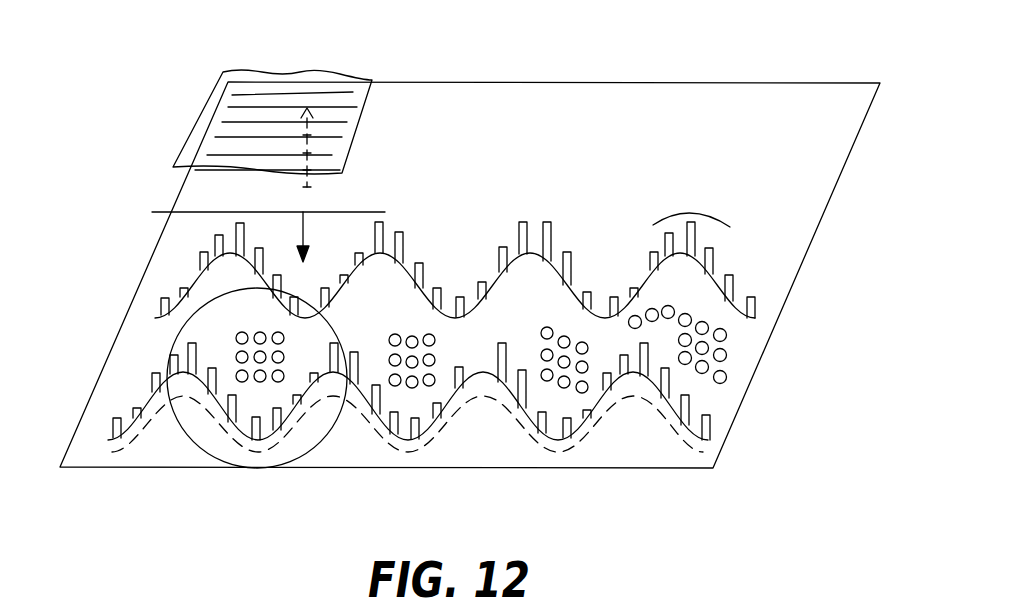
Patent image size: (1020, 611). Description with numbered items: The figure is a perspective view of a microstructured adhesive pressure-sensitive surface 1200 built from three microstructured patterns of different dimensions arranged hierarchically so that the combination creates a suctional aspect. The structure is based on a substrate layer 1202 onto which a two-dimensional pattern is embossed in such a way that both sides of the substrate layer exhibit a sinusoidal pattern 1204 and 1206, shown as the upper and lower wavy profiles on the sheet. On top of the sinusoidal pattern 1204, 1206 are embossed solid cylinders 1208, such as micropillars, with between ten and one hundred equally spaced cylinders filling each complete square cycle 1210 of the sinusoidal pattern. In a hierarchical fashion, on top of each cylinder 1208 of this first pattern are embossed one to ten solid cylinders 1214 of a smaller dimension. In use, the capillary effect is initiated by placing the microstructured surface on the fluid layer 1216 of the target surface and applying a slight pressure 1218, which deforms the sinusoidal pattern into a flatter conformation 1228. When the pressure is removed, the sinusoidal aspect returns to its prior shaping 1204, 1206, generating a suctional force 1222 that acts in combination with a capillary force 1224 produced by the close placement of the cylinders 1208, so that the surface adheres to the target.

The microstructured adhesive pressure-sensitive surface 1200 is at (612, 52).
The substrate layer 1202 is at (790, 247).
The sinusoidal pattern 1204 is at (717, 253).
The sinusoidal pattern 1206 is at (680, 458).
The solid cylinders 1208 is at (727, 356).
The complete square cycle 1210 is at (307, 455).
The solid cylinders of smaller dimension 1214 is at (550, 219).
The fluid layer 1216 is at (288, 77).
The slight pressure 1218 is at (307, 185).
The suctional force 1222 is at (268, 212).
The capillary force 1224 is at (676, 237).
The flatter conformation 1228 is at (330, 118).